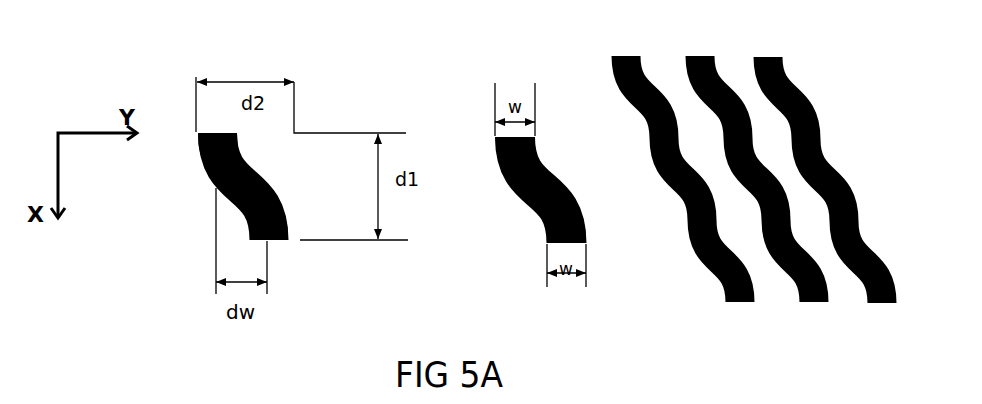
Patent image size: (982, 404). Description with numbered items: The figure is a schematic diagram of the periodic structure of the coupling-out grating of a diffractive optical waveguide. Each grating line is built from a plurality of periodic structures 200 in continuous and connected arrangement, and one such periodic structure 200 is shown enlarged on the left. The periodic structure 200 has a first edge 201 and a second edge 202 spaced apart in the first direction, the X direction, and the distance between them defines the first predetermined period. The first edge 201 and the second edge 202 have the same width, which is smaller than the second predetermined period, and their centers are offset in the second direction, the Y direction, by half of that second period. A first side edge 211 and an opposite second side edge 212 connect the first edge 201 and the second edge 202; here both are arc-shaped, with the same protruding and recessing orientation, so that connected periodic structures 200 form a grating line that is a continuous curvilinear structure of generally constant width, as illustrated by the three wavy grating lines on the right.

The periodic structure 200 is at (185, 54).
The first edge 201 is at (212, 132).
The second edge 202 is at (282, 243).
The first side edge 211 is at (210, 181).
The second side edge 212 is at (250, 164).